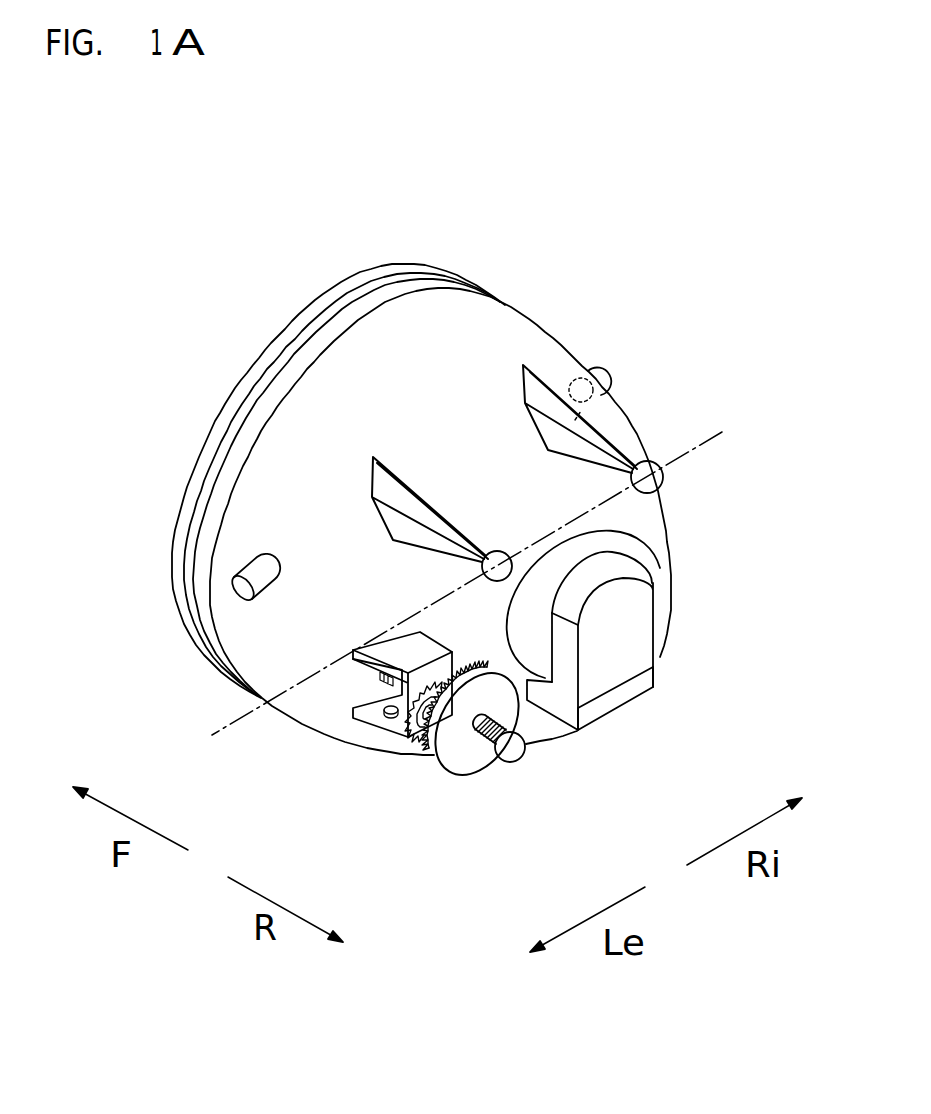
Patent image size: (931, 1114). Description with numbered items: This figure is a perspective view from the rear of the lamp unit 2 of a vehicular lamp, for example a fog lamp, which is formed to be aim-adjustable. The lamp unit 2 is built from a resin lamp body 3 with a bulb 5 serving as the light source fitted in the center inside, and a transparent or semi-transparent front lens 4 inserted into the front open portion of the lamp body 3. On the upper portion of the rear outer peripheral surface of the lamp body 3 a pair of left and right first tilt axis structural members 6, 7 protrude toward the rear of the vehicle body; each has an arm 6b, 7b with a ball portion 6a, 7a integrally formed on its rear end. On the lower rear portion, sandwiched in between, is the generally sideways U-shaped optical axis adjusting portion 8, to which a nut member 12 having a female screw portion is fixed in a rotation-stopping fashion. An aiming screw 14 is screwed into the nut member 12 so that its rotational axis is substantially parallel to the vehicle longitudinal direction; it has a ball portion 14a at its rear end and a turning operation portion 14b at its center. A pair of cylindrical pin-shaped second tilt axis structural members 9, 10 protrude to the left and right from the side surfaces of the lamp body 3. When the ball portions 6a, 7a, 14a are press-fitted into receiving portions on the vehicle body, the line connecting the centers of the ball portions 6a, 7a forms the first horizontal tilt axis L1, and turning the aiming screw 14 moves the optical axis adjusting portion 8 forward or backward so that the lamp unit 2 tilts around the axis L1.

The lamp unit 2 is at (485, 199).
The lamp body 3 is at (473, 323).
The front lens 4 is at (347, 286).
The bulb 5 is at (582, 547).
The first tilt axis structural member 6 is at (482, 378).
The ball portion 6a is at (494, 552).
The arm 6b is at (385, 484).
The first tilt axis structural member 7 is at (723, 260).
The ball portion 7a is at (648, 461).
The arm 7b is at (608, 423).
The optical axis adjusting portion 8 is at (403, 652).
The second tilt axis structural member 9 is at (238, 588).
The second tilt axis structural member 10 is at (603, 364).
The nut member 12 is at (430, 737).
The aiming screw 14 is at (452, 782).
The ball portion 14a is at (512, 748).
The turning operation portion 14b is at (482, 757).
The first horizontal tilt axis L1 is at (698, 447).